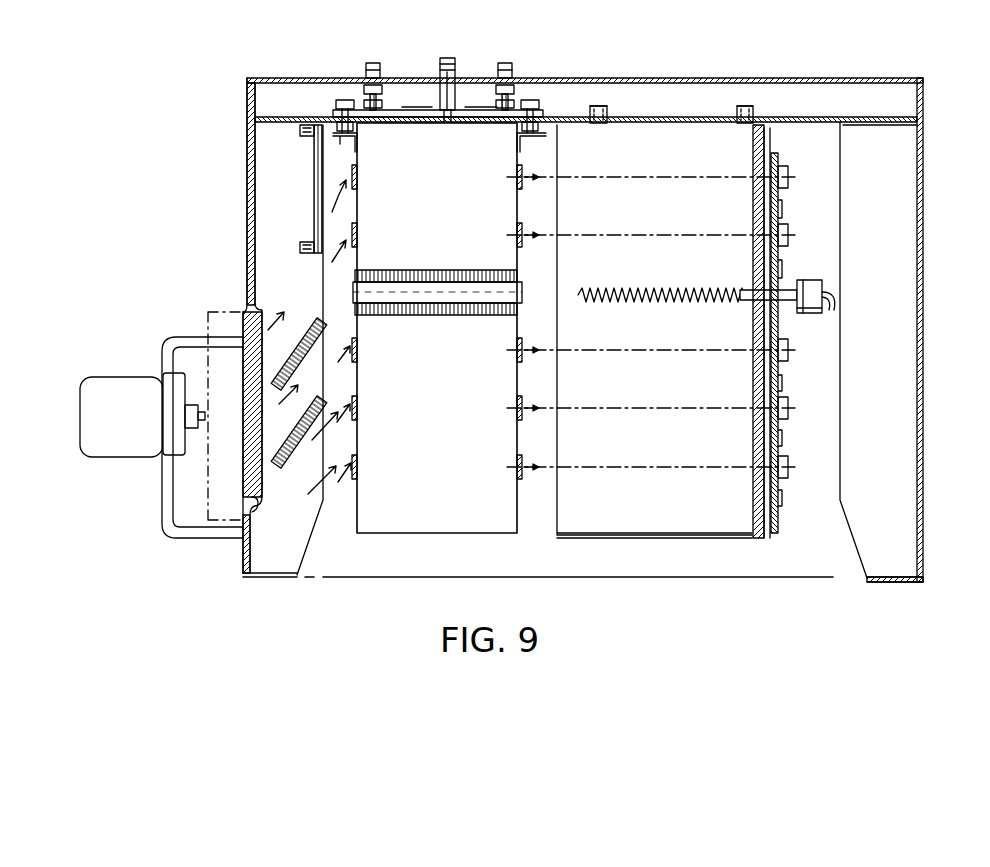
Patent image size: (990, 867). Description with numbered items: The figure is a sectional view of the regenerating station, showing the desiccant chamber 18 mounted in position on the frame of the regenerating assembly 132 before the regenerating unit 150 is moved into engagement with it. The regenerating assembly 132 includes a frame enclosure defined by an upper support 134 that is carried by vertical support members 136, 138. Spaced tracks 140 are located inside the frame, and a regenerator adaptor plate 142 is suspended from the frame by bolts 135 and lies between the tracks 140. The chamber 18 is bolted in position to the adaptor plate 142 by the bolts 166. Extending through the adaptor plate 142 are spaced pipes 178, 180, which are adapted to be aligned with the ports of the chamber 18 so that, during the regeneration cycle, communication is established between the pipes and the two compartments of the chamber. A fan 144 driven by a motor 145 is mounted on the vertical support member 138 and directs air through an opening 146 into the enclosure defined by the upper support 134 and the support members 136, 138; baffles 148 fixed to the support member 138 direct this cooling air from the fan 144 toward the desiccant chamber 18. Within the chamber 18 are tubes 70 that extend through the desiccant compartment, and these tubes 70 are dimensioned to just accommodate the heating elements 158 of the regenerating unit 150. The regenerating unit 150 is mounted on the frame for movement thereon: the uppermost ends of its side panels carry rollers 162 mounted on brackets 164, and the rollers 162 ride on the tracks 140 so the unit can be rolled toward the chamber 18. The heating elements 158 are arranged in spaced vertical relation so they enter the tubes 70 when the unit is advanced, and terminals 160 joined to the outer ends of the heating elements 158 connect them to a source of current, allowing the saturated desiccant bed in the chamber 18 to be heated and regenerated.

The desiccant chamber 18 is at (553, 212).
The tubes 70 is at (440, 280).
The regenerating assembly 132 is at (236, 96).
The upper support 134 is at (870, 97).
The bolts 135 is at (373, 62).
The vertical support member 136 is at (905, 205).
The vertical support member 138 is at (265, 193).
The tracks 140 is at (800, 118).
The regenerator adaptor plate 142 is at (402, 110).
The fan 144 is at (215, 520).
The motor 145 is at (120, 380).
The opening 146 is at (250, 502).
The baffles 148 is at (314, 200).
The regenerating unit 150 is at (786, 443).
The heating elements 158 is at (671, 301).
The terminals 160 is at (809, 316).
The rollers 162 is at (600, 104).
The brackets 164 is at (598, 125).
The bolts 166 is at (340, 100).
The pipe 178 is at (447, 112).
The pipe 180 is at (448, 58).